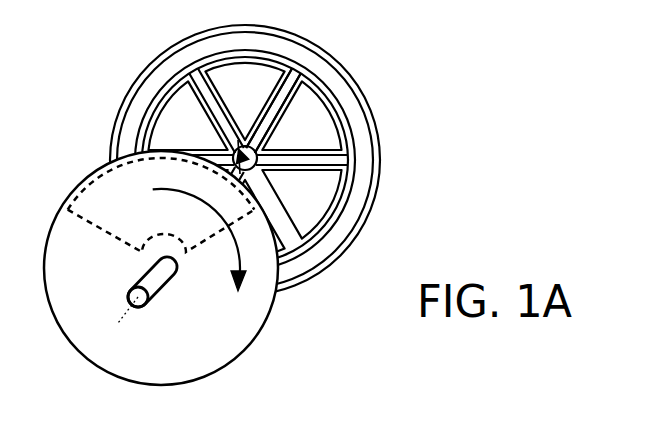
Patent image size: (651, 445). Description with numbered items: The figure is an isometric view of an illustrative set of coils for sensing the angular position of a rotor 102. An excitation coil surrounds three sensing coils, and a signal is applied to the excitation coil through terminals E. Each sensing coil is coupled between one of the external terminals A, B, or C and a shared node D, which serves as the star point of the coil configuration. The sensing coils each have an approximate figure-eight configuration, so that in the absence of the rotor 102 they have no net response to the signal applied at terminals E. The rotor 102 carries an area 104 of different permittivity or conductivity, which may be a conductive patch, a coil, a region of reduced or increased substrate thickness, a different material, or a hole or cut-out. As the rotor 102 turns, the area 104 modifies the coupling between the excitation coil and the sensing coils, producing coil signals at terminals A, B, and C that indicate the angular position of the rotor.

The external terminal A is at (236, 146).
The external terminal B is at (257, 142).
The external terminal C is at (283, 258).
The shared node D is at (233, 148).
The terminals E is at (355, 153).
The rotor 102 is at (243, 353).
The area of different permittivity or conductivity 104 is at (110, 235).